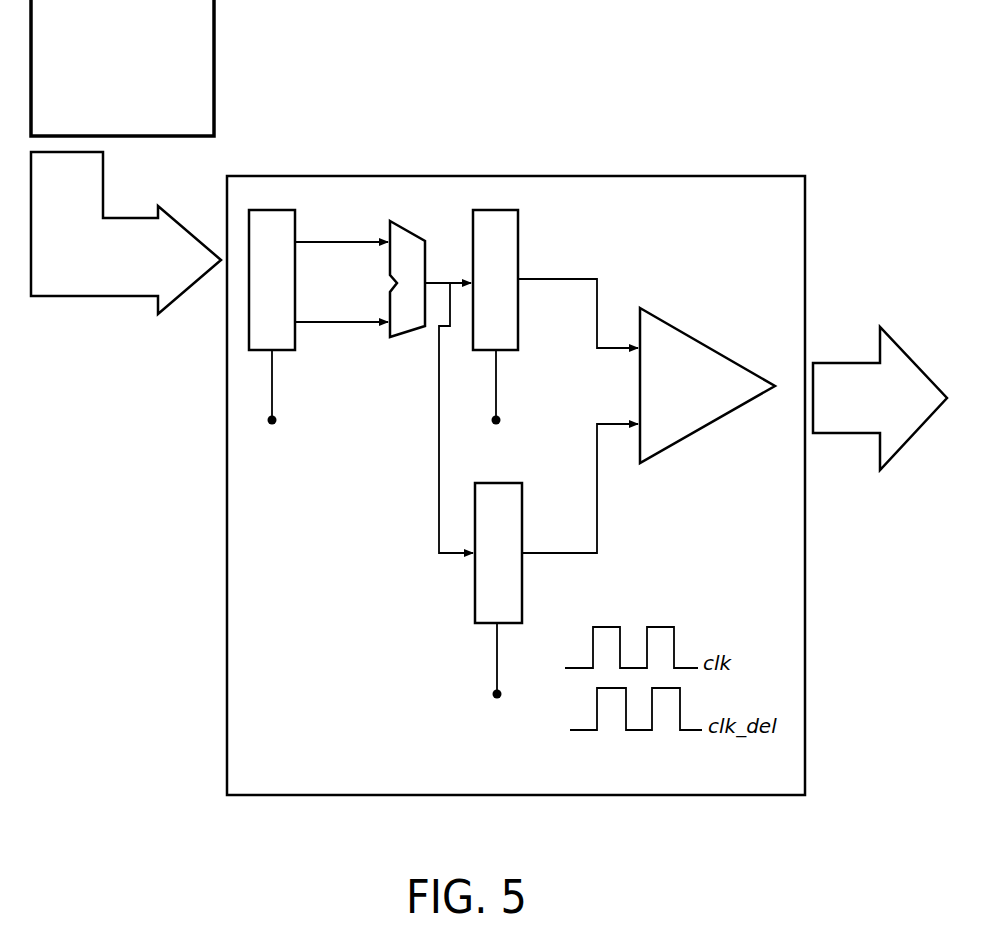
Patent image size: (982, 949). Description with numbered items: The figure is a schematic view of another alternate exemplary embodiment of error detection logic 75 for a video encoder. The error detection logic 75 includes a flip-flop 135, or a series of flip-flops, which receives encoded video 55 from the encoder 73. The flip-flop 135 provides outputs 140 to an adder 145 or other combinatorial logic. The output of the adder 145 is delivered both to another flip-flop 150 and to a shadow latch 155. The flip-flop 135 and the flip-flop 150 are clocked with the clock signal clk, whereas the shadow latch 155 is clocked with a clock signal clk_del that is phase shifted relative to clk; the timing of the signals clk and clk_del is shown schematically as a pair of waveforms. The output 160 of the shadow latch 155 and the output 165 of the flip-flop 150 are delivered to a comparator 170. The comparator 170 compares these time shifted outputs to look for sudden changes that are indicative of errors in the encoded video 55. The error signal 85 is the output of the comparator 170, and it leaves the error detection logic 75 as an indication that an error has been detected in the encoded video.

The encoder 73 is at (197, 104).
The encoded video 55 is at (128, 287).
The error detection logic 75 is at (690, 196).
The flip-flop 135 is at (268, 228).
The outputs 140 is at (342, 222).
The adder 145 is at (407, 250).
The flip-flop 150 is at (494, 245).
The shadow latch 155 is at (485, 595).
The output of the shadow latch 160 is at (567, 556).
The output of the flip-flop 165 is at (565, 278).
The comparator 170 is at (692, 357).
The error signal 85 is at (835, 370).